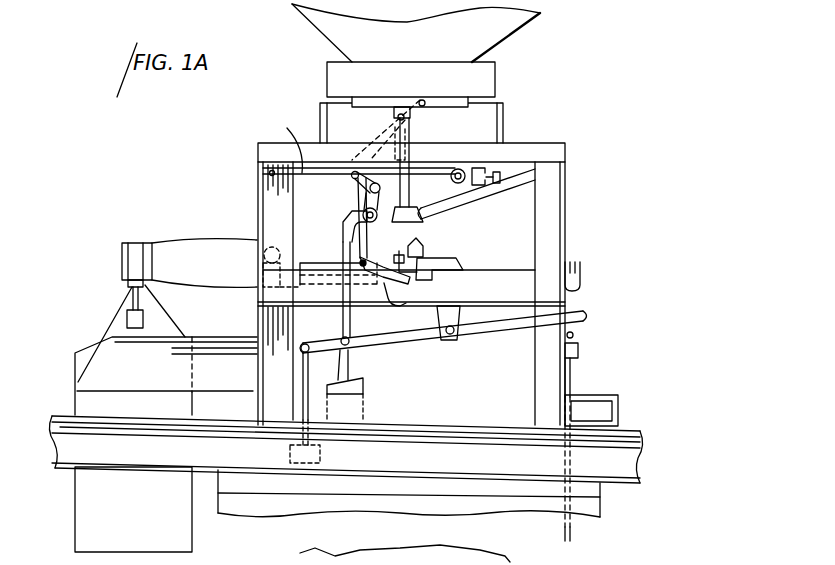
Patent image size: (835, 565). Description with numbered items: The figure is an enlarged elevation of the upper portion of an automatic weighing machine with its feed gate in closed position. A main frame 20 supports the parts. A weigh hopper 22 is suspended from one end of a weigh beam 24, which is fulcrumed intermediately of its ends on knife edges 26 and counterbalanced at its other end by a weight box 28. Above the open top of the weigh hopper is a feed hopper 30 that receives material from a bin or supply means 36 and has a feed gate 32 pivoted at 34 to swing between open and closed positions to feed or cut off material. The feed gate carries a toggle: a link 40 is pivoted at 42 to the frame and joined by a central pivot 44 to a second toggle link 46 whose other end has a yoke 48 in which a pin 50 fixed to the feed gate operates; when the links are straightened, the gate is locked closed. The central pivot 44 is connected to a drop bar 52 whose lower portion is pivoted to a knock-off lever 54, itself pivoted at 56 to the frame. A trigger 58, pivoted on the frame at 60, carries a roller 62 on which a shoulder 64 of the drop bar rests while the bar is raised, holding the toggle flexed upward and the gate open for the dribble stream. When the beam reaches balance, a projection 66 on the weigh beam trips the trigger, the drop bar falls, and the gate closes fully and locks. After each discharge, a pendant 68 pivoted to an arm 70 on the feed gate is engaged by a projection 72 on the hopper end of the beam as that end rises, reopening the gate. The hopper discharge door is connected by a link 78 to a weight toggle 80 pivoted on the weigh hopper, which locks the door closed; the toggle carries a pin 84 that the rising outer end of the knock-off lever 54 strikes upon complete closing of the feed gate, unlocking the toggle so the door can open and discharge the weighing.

The main frame 20 is at (570, 189).
The weigh hopper 22 is at (518, 380).
The weigh beam 24 is at (168, 252).
The knife edges 26 is at (262, 258).
The weight box 28 is at (90, 345).
The feed hopper 30 is at (487, 118).
The feed gate 32 is at (443, 193).
The pivot 34 is at (423, 98).
The bin or supply means 36 is at (337, 23).
The toggle link 40 is at (279, 143).
The pivot 42 is at (268, 173).
The central pivot 44 is at (353, 169).
The toggle link 46 is at (413, 185).
The yoke 48 is at (483, 170).
The pin 50 is at (470, 165).
The drop bar 52 is at (352, 343).
The knock-off lever 54 is at (580, 337).
The pivot 56 is at (452, 340).
The trigger 58 is at (394, 306).
The pivot 60 is at (361, 266).
The roller 62 is at (360, 206).
The shoulder 64 is at (343, 232).
The projection 66 is at (420, 266).
The pendant 68 is at (410, 190).
The arm 70 is at (400, 100).
The projection 72 is at (420, 246).
The link 78 is at (572, 537).
The weight toggle 80 is at (582, 276).
The pin 84 is at (575, 330).